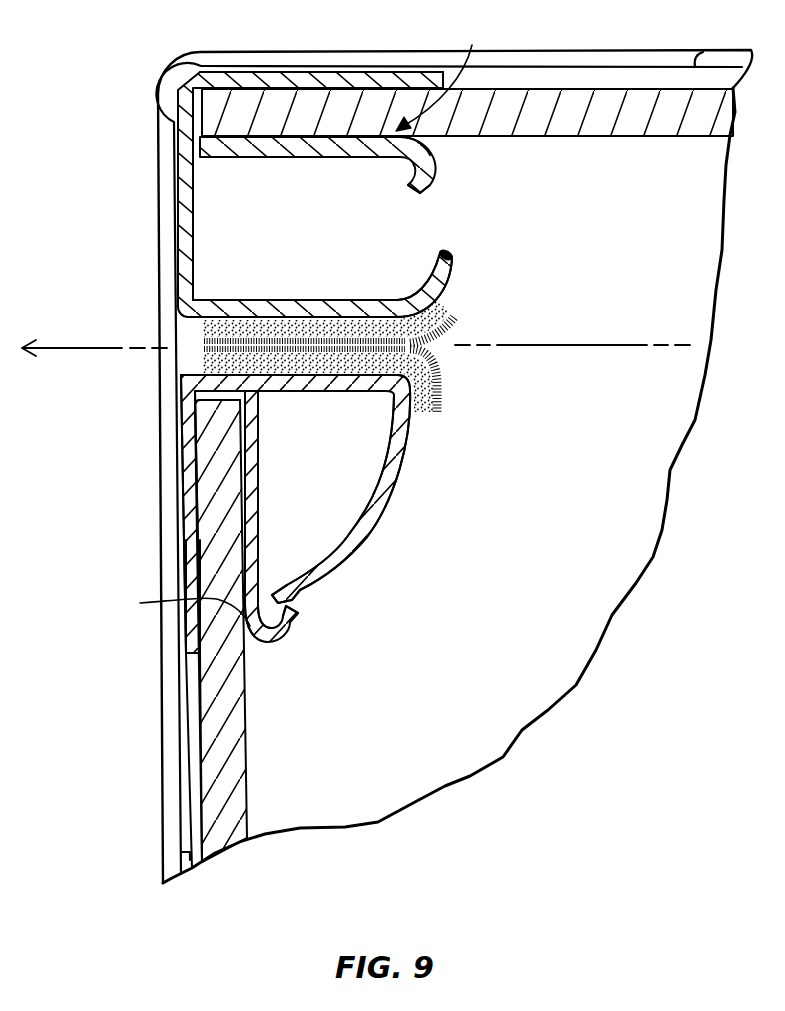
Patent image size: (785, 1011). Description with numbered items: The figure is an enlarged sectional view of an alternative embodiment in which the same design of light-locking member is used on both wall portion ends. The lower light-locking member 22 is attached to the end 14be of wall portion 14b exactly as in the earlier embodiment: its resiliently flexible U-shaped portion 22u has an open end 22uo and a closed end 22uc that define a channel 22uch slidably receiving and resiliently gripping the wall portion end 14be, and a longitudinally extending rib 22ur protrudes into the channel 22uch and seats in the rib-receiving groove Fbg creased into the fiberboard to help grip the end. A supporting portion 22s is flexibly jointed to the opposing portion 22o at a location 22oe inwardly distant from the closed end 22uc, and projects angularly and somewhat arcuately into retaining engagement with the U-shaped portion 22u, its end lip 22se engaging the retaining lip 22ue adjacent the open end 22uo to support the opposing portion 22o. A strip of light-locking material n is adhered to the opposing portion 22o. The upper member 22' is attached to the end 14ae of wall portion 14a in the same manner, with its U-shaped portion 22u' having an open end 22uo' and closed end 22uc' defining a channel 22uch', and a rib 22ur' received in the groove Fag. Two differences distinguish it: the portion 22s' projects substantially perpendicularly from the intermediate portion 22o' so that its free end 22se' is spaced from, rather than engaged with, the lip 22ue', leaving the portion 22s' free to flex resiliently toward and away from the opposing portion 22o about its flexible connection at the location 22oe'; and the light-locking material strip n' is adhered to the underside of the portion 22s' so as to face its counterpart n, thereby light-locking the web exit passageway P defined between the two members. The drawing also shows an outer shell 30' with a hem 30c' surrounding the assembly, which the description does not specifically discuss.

The light-locking member 22' is at (258, 194).
The U-shaped portion 22u' is at (321, 46).
The channel 22uch' is at (332, 47).
The closed end 22uc' is at (133, 147).
The intermediate portion 22o' is at (139, 250).
The location 22oe' is at (243, 292).
The portion 22s' is at (398, 285).
The free end 22se' is at (477, 239).
The open end 22uo' is at (354, 154).
The rib 22ur' is at (380, 163).
The lip 22ue' is at (458, 185).
The rib-receiving groove Fag is at (446, 75).
The wall portion 14a is at (680, 120).
The wall portion end 14ae is at (196, 92).
The outer shell 30' is at (430, 466).
The shell edge hem 30c' is at (415, 433).
The light-locking material strip n' is at (341, 318).
The light-locking material strip n is at (340, 381).
The web exit passageway P is at (572, 343).
The light-locking member 22 is at (241, 514).
The opposing portion 22o is at (289, 397).
The location 22oe is at (363, 423).
The U-shaped portion 22u is at (147, 514).
The channel 22uch is at (144, 582).
The open end 22uo is at (158, 755).
The closed end 22uc is at (282, 498).
The rib 22ur is at (279, 589).
The retaining lip 22ue is at (315, 638).
The supporting portion 22s is at (369, 490).
The end lip 22se is at (320, 600).
The rib-receiving groove Fbg is at (170, 609).
The wall portion 14b is at (226, 838).
The wall portion end 14be is at (195, 400).